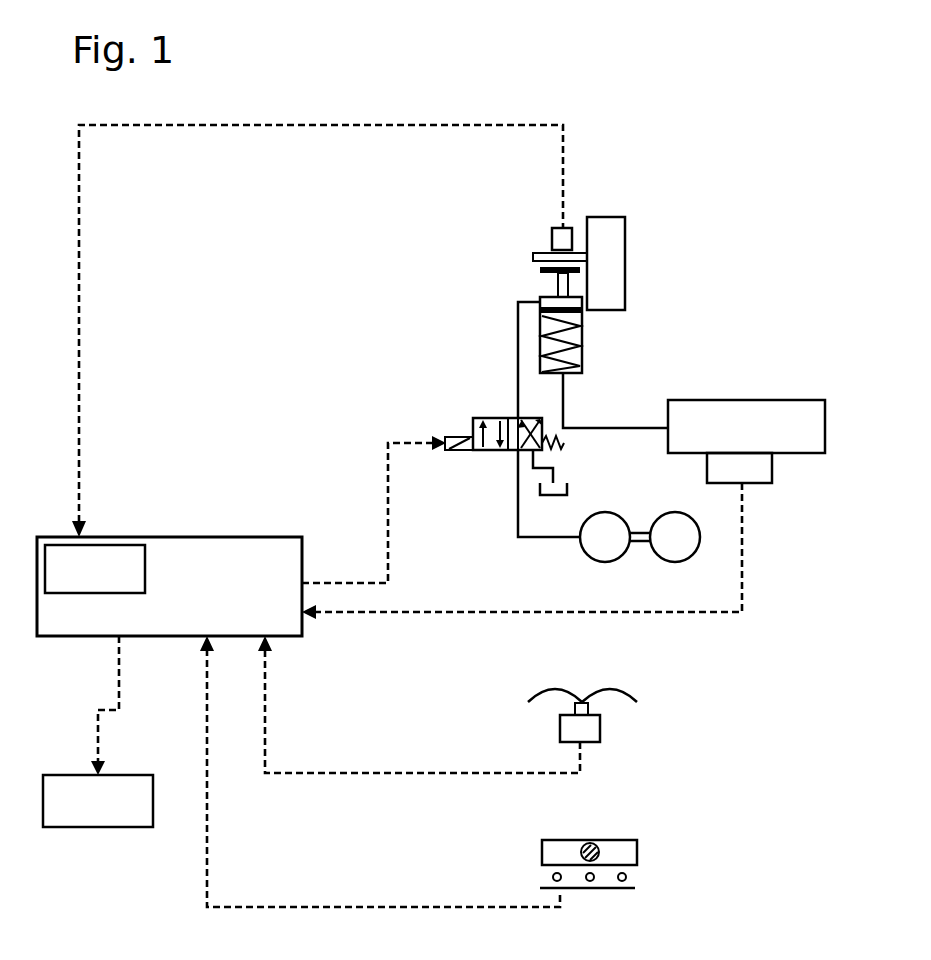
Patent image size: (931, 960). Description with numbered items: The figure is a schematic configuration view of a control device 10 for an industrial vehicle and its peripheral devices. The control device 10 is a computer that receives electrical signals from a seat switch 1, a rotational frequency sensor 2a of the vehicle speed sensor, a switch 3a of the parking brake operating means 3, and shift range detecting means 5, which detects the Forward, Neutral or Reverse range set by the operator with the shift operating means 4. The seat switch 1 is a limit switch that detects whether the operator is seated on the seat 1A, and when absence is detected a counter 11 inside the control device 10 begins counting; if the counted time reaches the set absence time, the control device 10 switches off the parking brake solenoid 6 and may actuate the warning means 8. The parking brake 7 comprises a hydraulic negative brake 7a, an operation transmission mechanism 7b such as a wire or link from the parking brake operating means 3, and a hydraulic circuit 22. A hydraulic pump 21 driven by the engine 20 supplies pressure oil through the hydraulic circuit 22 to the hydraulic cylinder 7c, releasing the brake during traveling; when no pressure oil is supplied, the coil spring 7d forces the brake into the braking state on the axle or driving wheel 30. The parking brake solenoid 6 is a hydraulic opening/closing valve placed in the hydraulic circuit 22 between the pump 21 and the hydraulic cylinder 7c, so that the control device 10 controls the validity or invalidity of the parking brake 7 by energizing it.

The seat switch 1 is at (600, 728).
The seat 1A is at (607, 693).
The rotational frequency sensor 2a is at (571, 228).
The parking brake operating means 3 is at (784, 400).
The switch 3a is at (772, 466).
The shift operating means 4 is at (637, 852).
The shift range detecting means 5 is at (635, 888).
The parking brake solenoid 6 is at (488, 418).
The parking brake 7 is at (652, 387).
The hydraulic negative brake 7a is at (582, 338).
The operation transmission mechanism 7b is at (622, 428).
The hydraulic cylinder 7c is at (540, 299).
The coil spring 7d is at (580, 352).
The warning means 8 is at (118, 828).
The control device 10 is at (169, 561).
The counter 11 is at (118, 545).
The engine 20 is at (688, 562).
The hydraulic pump 21 is at (610, 562).
The hydraulic circuit 22 is at (518, 500).
The driving wheel 30 is at (625, 242).